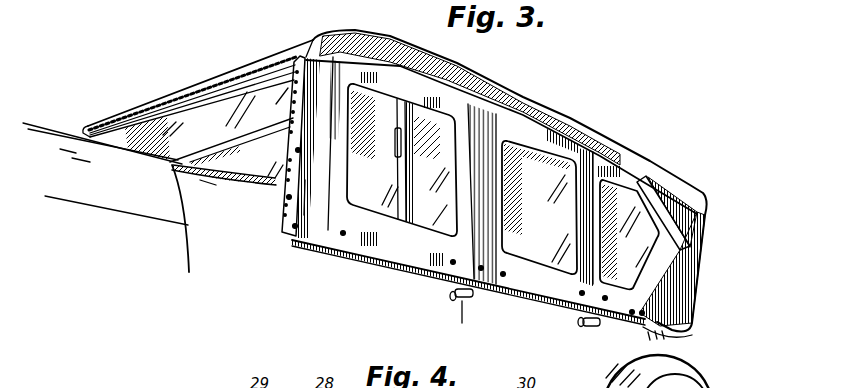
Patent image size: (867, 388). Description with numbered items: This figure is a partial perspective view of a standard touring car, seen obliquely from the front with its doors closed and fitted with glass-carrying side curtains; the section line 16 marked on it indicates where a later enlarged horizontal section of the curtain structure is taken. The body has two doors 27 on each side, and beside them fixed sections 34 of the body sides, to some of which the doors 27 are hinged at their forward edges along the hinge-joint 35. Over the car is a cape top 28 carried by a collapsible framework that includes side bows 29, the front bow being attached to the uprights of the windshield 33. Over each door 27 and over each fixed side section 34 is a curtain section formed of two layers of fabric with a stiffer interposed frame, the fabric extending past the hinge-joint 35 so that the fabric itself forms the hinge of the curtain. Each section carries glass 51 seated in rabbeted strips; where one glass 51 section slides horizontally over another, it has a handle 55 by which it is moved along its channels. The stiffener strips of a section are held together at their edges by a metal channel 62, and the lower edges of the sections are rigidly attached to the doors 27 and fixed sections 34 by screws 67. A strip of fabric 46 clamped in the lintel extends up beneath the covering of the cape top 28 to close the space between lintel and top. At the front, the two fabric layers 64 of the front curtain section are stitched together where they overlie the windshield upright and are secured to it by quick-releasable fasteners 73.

The windshield 16 is at (292, 147).
The door 27 is at (468, 287).
The cape top 28 is at (608, 141).
The side bow 29 is at (700, 238).
The windshield 33 is at (198, 101).
The fixed section 34 is at (614, 316).
The hinge-joint 35 is at (387, 308).
The strip of fabric 46 is at (520, 100).
The glass 51 is at (427, 223).
The handle 55 is at (397, 140).
The metal channel 62 is at (462, 275).
The fabric layers 64 is at (312, 197).
The screws 67 is at (343, 236).
The fasteners 73 is at (292, 106).